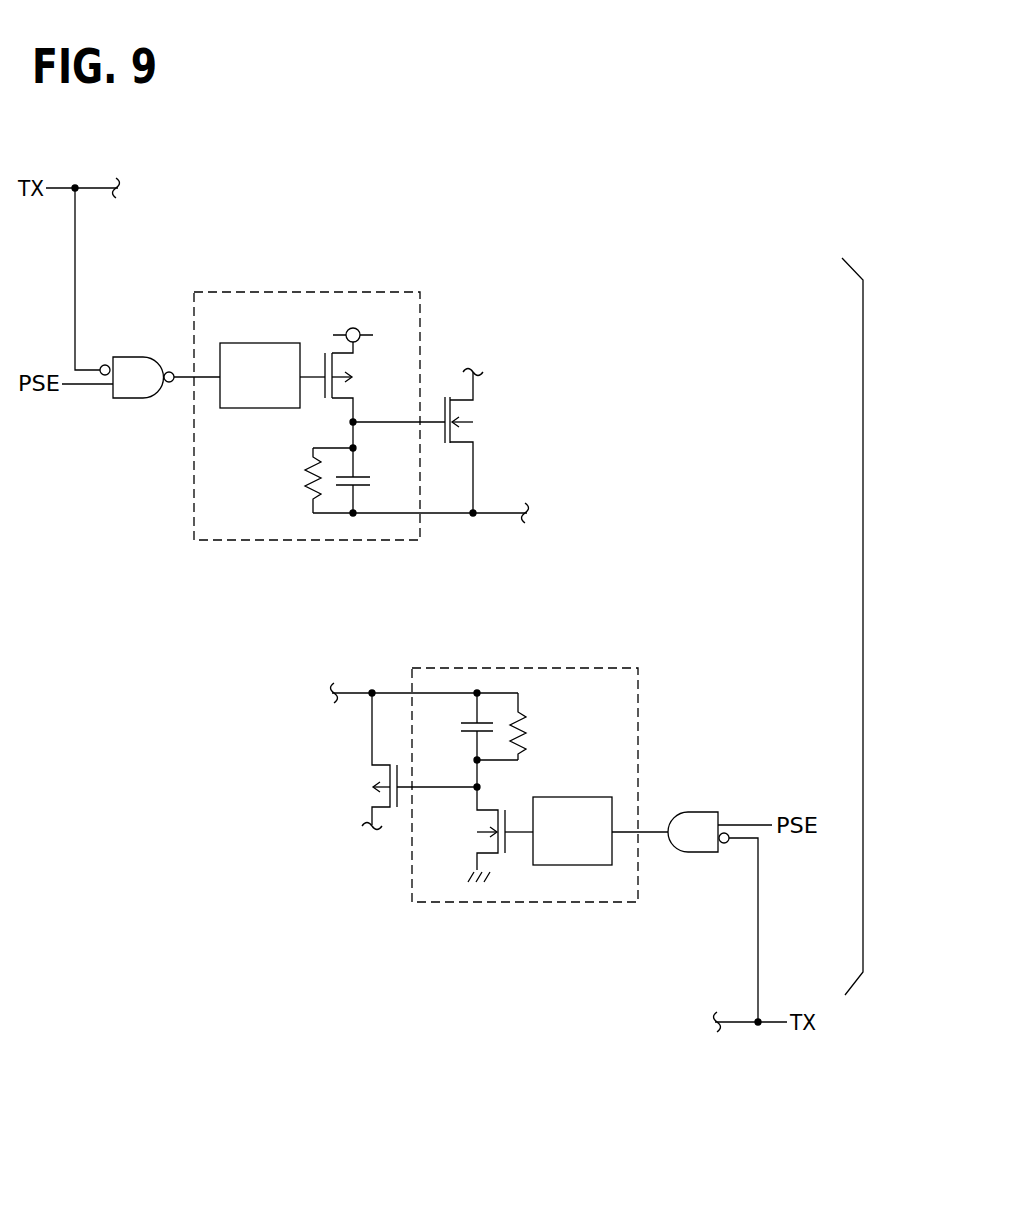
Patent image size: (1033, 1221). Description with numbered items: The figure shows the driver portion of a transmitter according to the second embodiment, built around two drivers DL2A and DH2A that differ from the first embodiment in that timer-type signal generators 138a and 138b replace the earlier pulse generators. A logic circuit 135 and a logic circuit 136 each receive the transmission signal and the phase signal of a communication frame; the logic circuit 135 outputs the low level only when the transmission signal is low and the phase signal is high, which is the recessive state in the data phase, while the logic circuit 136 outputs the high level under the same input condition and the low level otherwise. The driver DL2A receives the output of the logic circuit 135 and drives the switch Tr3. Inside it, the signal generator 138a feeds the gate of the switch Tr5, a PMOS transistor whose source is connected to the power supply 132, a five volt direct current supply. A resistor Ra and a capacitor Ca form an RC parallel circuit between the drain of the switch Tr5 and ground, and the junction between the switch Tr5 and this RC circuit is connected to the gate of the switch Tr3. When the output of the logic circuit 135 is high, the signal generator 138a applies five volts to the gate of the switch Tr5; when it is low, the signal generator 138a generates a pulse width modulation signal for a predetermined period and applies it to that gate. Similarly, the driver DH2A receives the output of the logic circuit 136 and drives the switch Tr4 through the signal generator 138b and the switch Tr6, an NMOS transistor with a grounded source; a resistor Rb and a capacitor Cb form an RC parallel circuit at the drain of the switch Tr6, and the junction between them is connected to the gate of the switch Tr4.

The logic circuit 135 is at (131, 357).
The logic circuit 136 is at (703, 812).
The signal generator 138a is at (258, 343).
The signal generator 138b is at (573, 797).
The power supply 132 is at (360, 328).
The switch Tr3 is at (476, 428).
The switch Tr4 is at (368, 768).
The switch Tr5 is at (353, 380).
The switch Tr6 is at (476, 832).
The resistor Ra is at (302, 478).
The capacitor Ca is at (362, 476).
The resistor Rb is at (526, 722).
The capacitor Cb is at (467, 717).
The driver DL2A is at (310, 292).
The driver DH2A is at (560, 668).